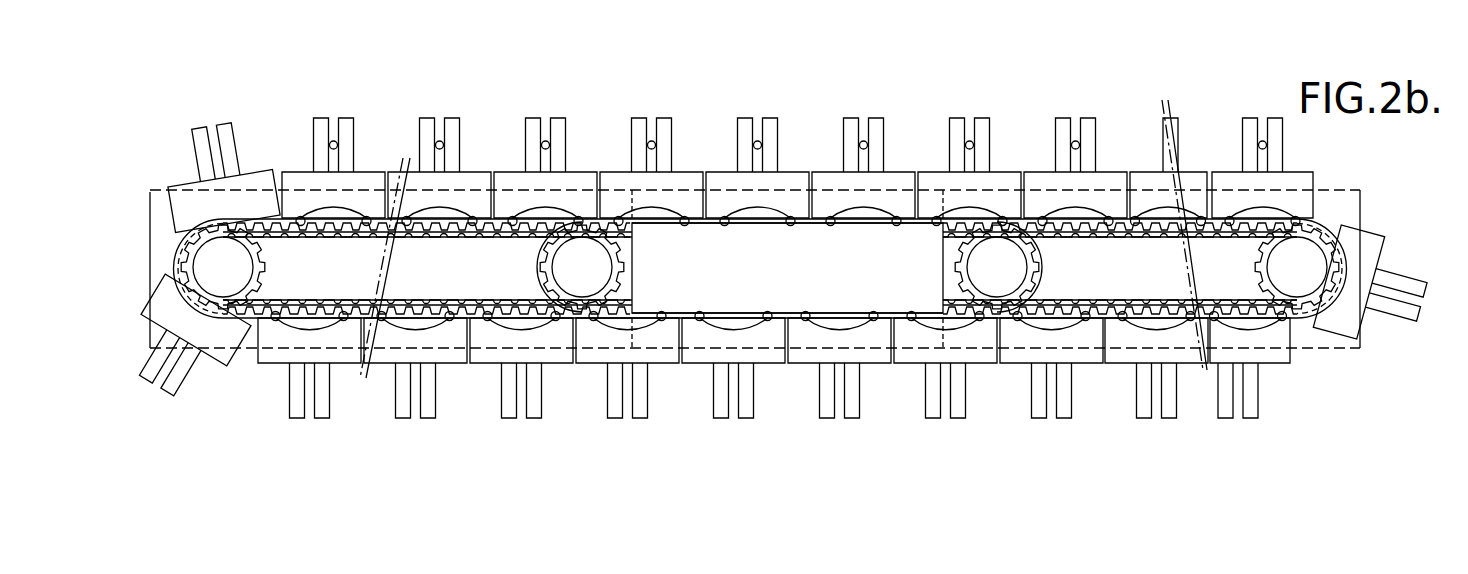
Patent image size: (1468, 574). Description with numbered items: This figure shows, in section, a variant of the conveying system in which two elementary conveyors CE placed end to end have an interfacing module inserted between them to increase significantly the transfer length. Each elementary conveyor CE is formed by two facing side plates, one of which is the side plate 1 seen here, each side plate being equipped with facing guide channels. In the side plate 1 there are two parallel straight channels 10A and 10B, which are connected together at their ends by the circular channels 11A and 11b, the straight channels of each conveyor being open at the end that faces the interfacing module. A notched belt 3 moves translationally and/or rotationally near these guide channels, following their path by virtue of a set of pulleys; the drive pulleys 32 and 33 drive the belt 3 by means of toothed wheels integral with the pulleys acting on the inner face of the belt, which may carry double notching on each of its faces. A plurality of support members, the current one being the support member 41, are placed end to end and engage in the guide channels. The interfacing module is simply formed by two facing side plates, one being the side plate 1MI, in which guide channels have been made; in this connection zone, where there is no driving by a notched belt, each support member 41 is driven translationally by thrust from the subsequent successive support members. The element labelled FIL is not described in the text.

The side plate 1 is at (158, 257).
The notched belt 3 is at (200, 228).
The circular channel 11A is at (178, 248).
The circular channel 11b is at (1322, 220).
The drive pulley 32 is at (235, 267).
The drive pulley 33 is at (1293, 272).
The parallel straight channel 10A is at (797, 223).
The parallel straight channel 10B is at (612, 316).
The current support member 41 is at (903, 182).
The wire FIL is at (545, 145).
The side plate of interfacing module 1MI is at (782, 247).
The elementary conveyor CE is at (253, 323).